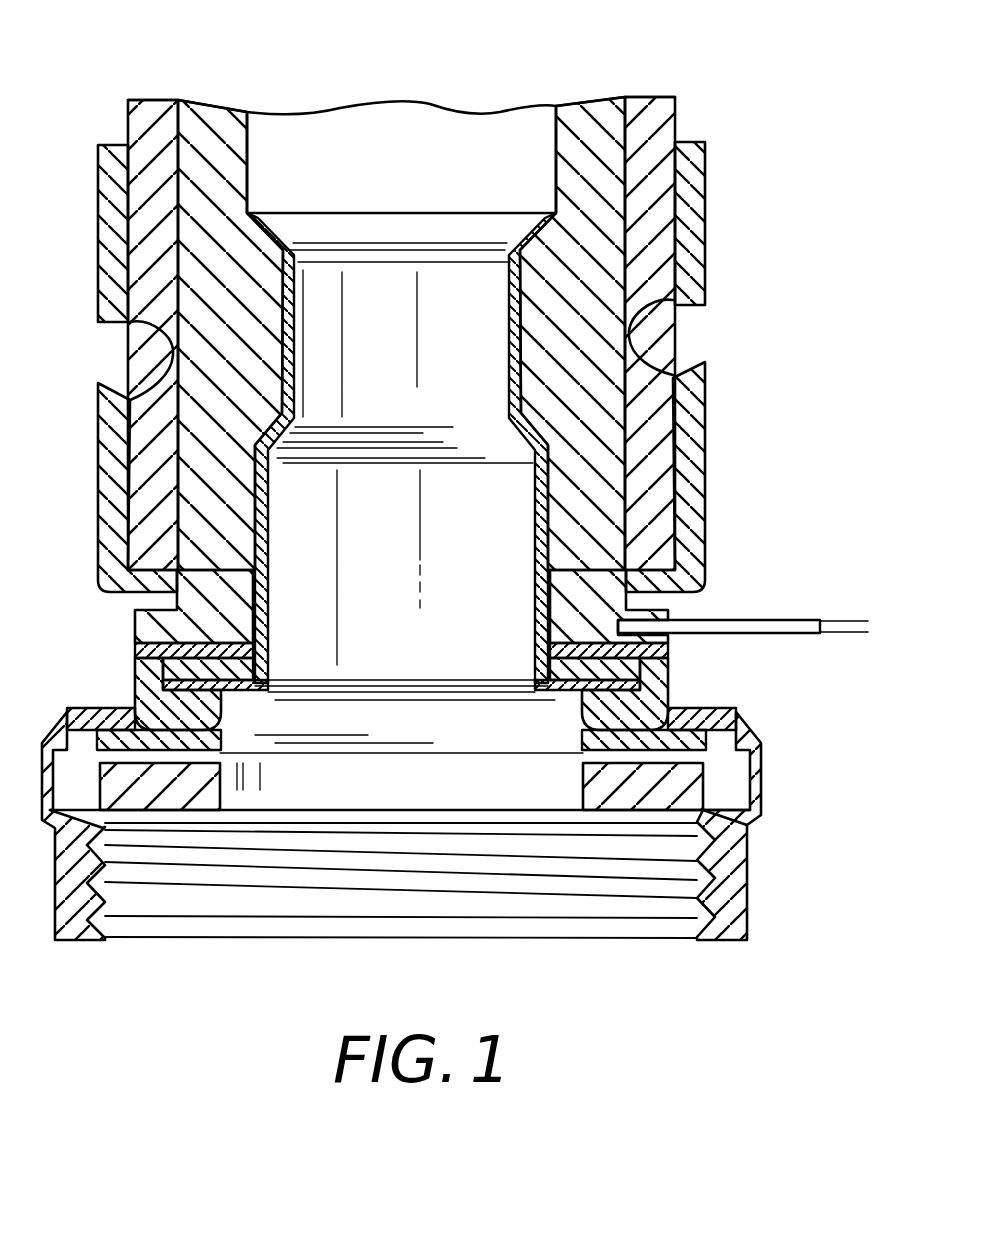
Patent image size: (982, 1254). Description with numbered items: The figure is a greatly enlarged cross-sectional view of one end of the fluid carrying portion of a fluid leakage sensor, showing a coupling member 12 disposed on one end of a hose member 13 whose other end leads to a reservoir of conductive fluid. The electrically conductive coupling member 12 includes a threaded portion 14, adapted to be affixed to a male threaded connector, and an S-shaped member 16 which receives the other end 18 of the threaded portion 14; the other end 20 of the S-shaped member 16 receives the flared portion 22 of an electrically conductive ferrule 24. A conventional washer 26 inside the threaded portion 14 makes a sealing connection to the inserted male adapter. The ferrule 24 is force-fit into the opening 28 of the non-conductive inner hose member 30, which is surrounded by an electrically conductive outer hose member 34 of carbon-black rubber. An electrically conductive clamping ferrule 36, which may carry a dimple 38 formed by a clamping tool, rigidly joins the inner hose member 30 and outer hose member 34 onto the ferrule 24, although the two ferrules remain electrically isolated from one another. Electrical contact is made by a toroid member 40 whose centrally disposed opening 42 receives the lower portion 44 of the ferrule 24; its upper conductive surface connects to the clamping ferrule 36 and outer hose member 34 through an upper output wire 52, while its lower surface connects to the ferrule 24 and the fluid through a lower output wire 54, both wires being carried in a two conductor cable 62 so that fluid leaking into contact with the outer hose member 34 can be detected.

The coupling member 12 is at (786, 754).
The hose member 13 is at (677, 73).
The threaded portion 14 is at (749, 860).
The S-shaped member 16 is at (669, 685).
The other end of the threaded portion 18 is at (724, 713).
The other end of the S-shaped member 20 is at (650, 667).
The flared portion 22 is at (573, 694).
The electrically conductive ferrule 24 is at (522, 567).
The washer 26 is at (212, 787).
The opening 28 is at (250, 178).
The inner hose member 30 is at (206, 102).
The outer hose member 34 is at (149, 117).
The clamping ferrule 36 is at (104, 143).
The dimple 38 is at (130, 353).
The toroid member 40 is at (132, 627).
The centrally disposed opening 42 is at (547, 624).
The lower portion 44 is at (282, 667).
The upper output wire 52 is at (842, 619).
The lower output wire 54 is at (835, 634).
The two conductor cable 62 is at (740, 620).